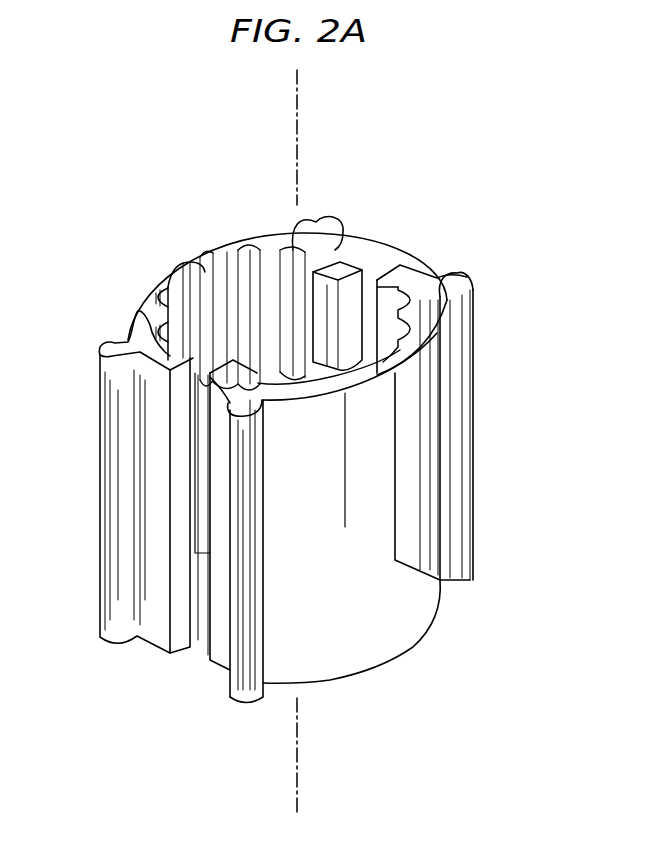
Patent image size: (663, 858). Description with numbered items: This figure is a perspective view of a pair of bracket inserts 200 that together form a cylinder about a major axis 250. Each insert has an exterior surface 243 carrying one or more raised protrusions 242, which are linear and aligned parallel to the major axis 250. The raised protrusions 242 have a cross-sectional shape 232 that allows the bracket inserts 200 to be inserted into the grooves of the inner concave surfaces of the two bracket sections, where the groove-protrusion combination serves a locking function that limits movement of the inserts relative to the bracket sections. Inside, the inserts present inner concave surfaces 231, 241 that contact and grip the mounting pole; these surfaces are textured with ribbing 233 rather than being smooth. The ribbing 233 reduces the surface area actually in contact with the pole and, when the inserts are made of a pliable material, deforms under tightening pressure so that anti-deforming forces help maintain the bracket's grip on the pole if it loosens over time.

The bracket inserts 200 is at (449, 181).
The inner concave surface 231 is at (219, 272).
The cross-sectional shape 232 is at (330, 223).
The ribbing 233 is at (287, 252).
The inner concave surface 241 is at (392, 289).
The raised protrusions 242 is at (457, 457).
The exterior surface 243 is at (377, 643).
The major axis 250 is at (300, 127).